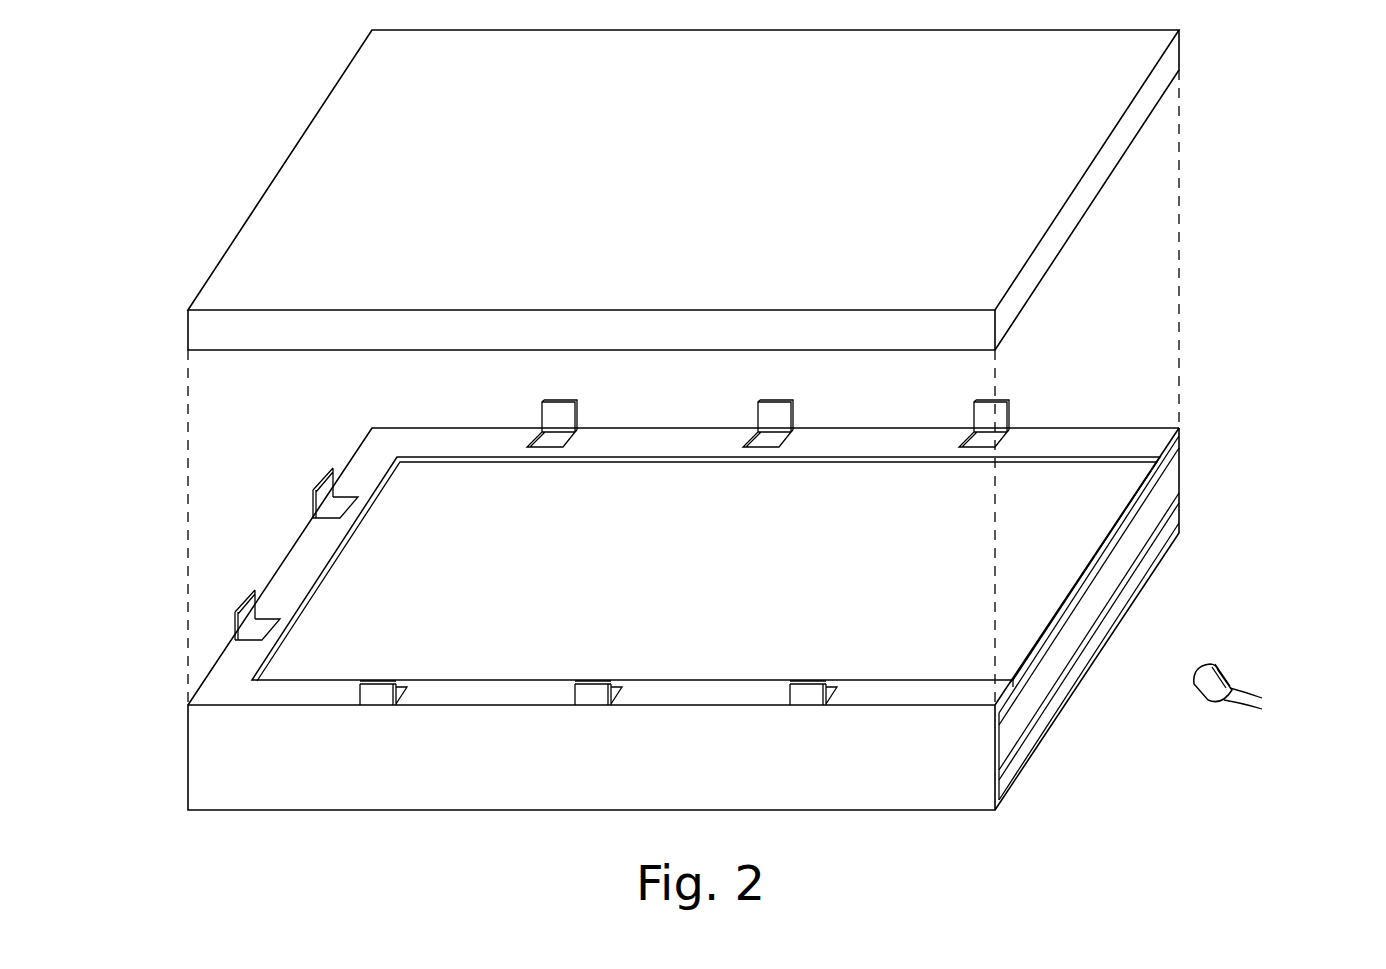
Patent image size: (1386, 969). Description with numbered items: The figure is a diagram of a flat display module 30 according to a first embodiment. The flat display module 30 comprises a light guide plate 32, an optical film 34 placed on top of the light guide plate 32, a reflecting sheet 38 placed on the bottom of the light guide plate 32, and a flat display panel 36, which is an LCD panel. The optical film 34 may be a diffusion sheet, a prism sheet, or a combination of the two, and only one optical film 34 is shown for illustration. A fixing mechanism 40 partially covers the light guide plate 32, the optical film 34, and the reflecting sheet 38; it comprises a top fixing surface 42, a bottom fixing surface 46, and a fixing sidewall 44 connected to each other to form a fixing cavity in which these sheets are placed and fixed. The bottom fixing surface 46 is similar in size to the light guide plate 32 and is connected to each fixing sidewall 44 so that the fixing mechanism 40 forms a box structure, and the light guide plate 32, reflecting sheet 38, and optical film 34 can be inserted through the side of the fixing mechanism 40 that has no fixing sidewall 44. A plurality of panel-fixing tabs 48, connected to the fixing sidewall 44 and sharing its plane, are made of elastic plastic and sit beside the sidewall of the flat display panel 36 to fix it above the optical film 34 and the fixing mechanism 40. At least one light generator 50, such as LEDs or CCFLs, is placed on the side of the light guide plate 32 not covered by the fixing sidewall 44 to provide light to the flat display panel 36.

The flat display module 30 is at (1211, 105).
The light guide plate 32 is at (1168, 498).
The optical film 34 is at (1165, 454).
The flat display panel 36 is at (284, 213).
The reflecting sheet 38 is at (1172, 524).
The fixing mechanism 40 is at (215, 631).
The top fixing surface 42 is at (297, 570).
The fixing sidewall 44 is at (206, 771).
The bottom fixing surface 46 is at (1045, 735).
The panel-fixing tab 48 is at (325, 490).
The light generator 50 is at (1214, 670).